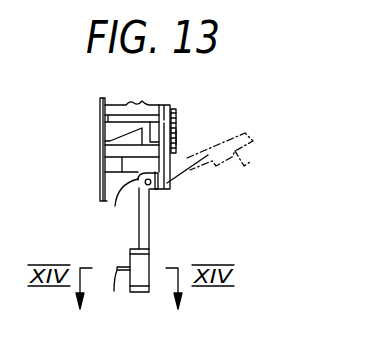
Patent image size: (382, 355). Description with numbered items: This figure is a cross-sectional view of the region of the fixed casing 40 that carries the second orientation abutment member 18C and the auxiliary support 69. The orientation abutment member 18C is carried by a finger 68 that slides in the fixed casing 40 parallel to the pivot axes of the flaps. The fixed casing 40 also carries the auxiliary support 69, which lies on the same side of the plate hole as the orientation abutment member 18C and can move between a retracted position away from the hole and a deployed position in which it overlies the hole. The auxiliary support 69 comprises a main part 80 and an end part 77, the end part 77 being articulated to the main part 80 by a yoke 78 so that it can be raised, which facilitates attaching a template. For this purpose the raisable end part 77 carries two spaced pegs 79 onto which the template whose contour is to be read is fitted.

The finger 68 is at (138, 107).
The orientation abutment member 18C is at (176, 115).
The fixed casing 40 is at (178, 137).
The main part 80 is at (165, 164).
The auxiliary support 69 is at (168, 189).
The end part 77 is at (150, 238).
The yoke 78 is at (122, 199).
The pegs 79 is at (122, 288).